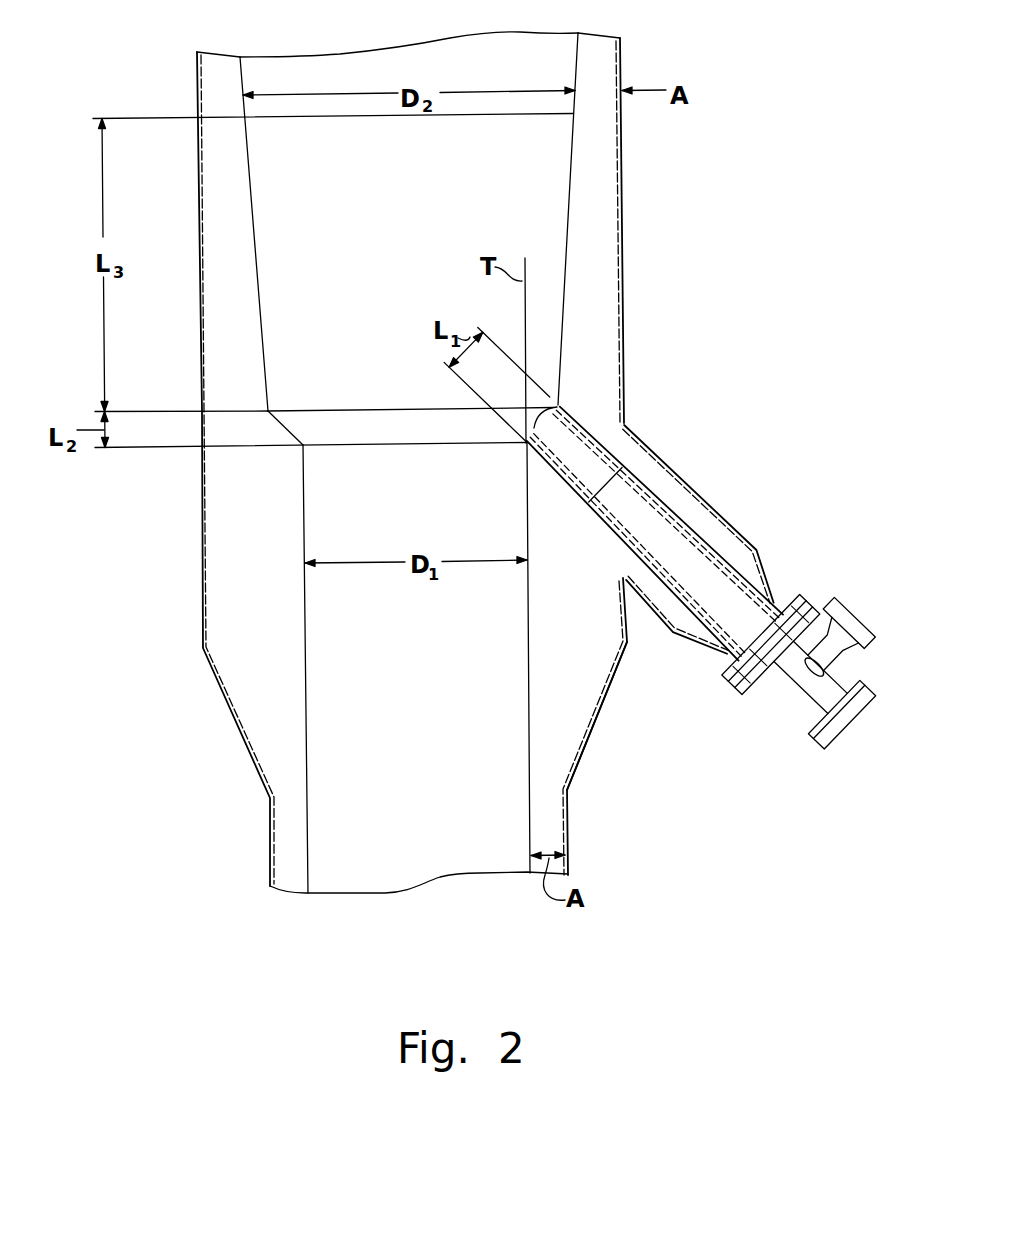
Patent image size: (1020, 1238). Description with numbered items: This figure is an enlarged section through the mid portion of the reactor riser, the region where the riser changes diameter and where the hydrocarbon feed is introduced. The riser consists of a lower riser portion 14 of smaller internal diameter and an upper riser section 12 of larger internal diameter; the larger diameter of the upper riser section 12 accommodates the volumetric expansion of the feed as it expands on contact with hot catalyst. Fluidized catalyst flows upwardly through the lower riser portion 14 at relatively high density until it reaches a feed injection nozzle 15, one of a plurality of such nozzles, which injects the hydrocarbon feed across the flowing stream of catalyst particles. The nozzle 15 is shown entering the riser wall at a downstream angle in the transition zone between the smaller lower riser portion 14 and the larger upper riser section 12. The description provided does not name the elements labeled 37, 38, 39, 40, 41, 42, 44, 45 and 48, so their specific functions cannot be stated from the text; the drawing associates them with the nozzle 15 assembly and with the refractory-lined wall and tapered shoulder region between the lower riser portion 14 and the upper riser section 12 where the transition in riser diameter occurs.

The upper riser section 12 is at (622, 196).
The lower riser portion 14 is at (570, 828).
The feed injection nozzle 15 is at (689, 484).
The valve outlet flange 37 is at (813, 703).
The valve bonnet 38 is at (840, 648).
The rounded refractory lip 39 is at (552, 410).
The shoulder transition 40 is at (284, 426).
The lower inner wall 41 is at (527, 501).
The upper refractory lining 42 is at (250, 194).
The lower refractory lining 44 is at (232, 488).
The shoulder surface 45 is at (353, 409).
The conical transition section 48 is at (607, 696).